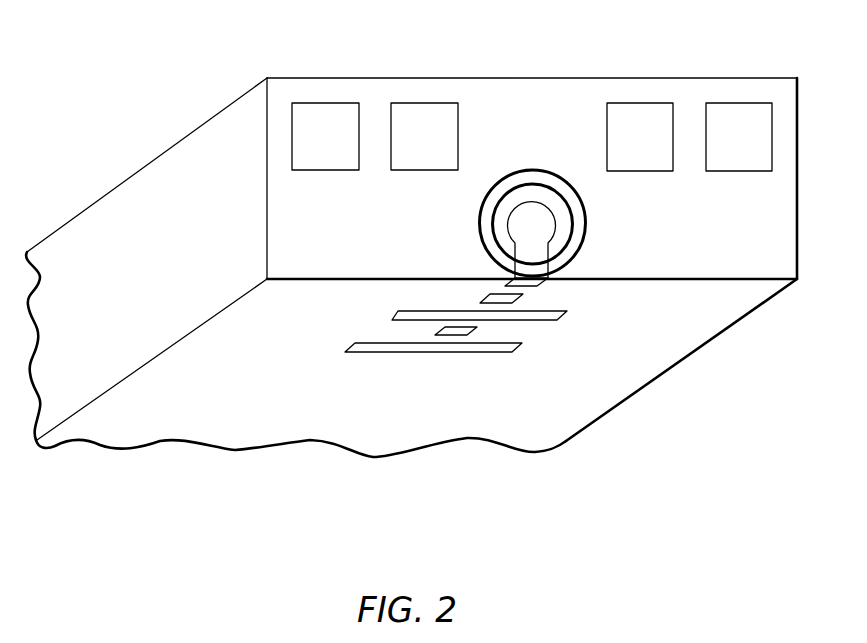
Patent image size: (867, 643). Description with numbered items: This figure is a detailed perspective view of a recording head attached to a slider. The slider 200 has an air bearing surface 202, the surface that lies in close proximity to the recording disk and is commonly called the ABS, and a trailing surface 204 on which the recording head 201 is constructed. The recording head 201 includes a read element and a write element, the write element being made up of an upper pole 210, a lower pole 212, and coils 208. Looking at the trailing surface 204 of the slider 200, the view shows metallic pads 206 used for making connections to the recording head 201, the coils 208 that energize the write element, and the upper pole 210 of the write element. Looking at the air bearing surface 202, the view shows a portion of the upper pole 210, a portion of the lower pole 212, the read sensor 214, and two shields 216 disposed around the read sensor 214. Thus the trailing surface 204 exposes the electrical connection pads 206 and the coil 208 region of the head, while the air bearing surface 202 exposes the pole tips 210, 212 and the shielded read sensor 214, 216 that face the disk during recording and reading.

The slider 200 is at (687, 387).
The recording head 201 is at (345, 378).
The air bearing surface 202 is at (748, 302).
The trailing surface 204 is at (782, 248).
The metallic pads 206 is at (408, 120).
The coils 208 is at (573, 205).
The upper pole 210 is at (515, 228).
The lower pole 212 is at (510, 299).
The read sensor 214 is at (460, 332).
The shields 216 is at (412, 313).